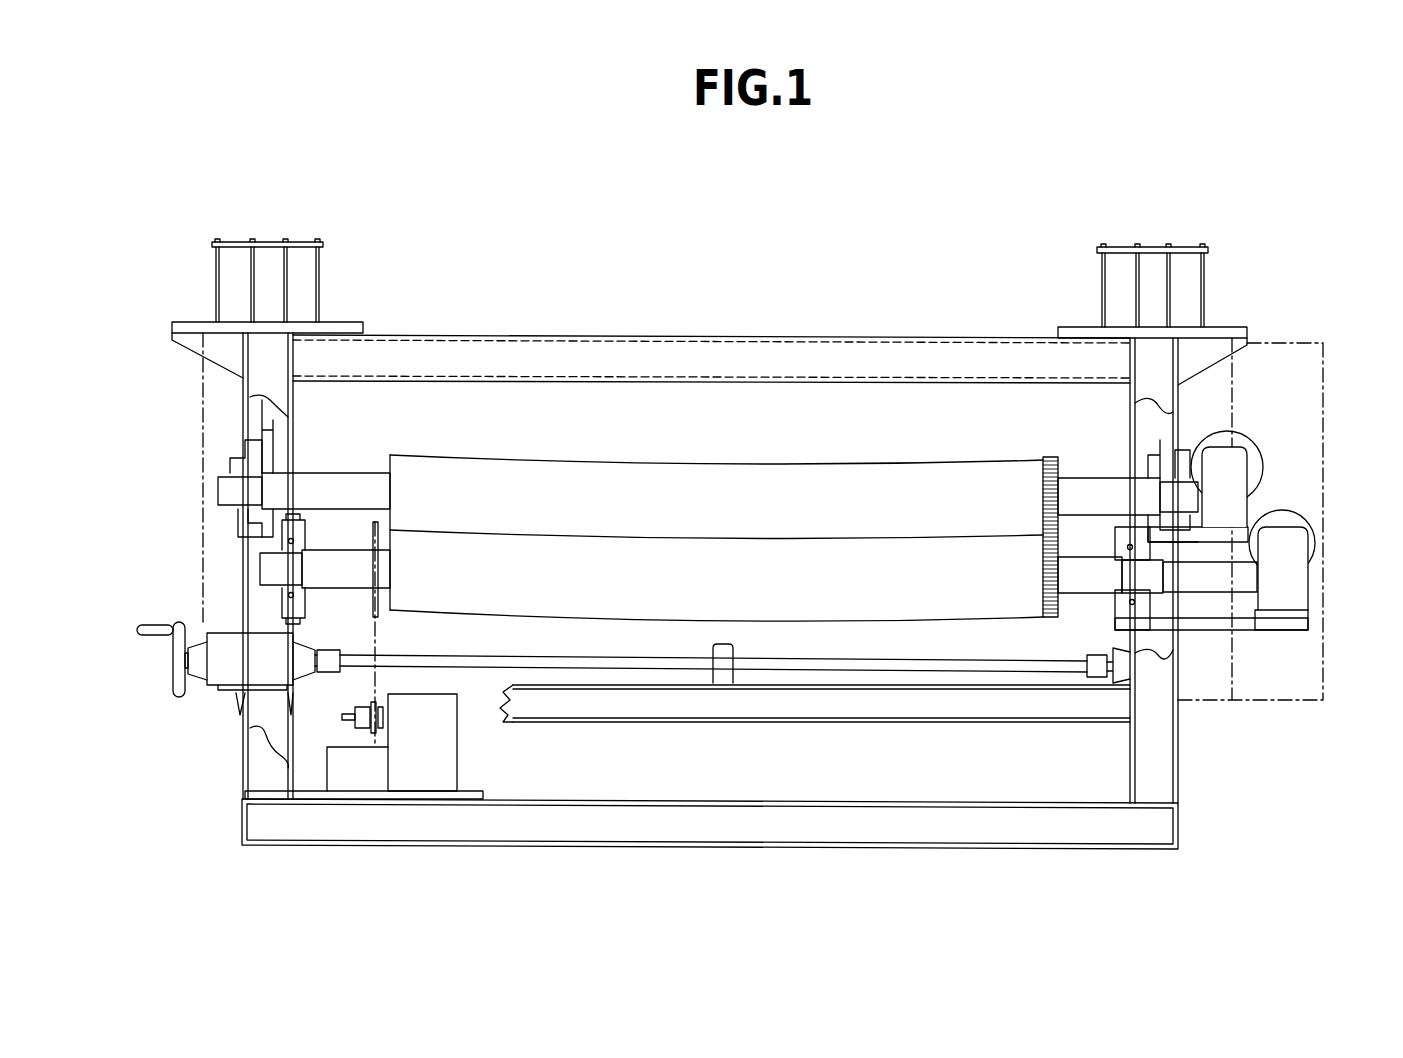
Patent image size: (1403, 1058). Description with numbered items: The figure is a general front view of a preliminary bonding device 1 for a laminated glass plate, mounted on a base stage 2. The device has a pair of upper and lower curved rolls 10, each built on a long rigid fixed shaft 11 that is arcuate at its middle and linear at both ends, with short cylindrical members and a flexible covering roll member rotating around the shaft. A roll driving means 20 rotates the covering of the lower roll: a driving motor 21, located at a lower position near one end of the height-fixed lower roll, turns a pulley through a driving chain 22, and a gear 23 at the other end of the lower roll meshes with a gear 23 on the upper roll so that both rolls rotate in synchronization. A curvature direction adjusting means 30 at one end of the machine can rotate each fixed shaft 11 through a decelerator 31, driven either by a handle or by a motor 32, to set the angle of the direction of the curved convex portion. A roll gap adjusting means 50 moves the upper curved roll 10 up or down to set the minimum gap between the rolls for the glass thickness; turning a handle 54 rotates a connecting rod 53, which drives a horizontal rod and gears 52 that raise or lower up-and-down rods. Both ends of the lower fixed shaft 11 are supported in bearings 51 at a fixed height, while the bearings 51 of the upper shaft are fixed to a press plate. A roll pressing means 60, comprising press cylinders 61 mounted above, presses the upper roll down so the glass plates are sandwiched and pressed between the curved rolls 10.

The preliminary bonding device 1 is at (838, 280).
The base stage 2 is at (617, 820).
The curved roll 10 is at (568, 570).
The fixed shaft 11 is at (352, 568).
The roll driving means 20 is at (366, 742).
The driving motor 21 is at (423, 742).
The driving chain 22 is at (380, 630).
The gear 23 is at (1037, 573).
The curvature direction adjusting means 30 is at (1293, 501).
The decelerator 31 is at (1228, 505).
The motor 32 is at (1255, 467).
The roll gap adjusting means 50 is at (196, 608).
The bearing 51 is at (245, 458).
The gear 52 is at (258, 666).
The connecting rod 53 is at (767, 663).
The handle 54 is at (178, 678).
The roll pressing means 60 is at (268, 224).
The press cylinder 61 is at (272, 268).